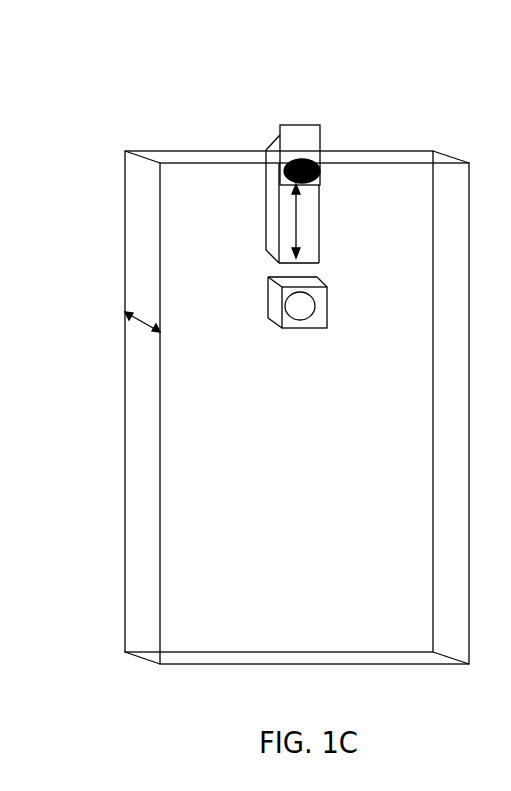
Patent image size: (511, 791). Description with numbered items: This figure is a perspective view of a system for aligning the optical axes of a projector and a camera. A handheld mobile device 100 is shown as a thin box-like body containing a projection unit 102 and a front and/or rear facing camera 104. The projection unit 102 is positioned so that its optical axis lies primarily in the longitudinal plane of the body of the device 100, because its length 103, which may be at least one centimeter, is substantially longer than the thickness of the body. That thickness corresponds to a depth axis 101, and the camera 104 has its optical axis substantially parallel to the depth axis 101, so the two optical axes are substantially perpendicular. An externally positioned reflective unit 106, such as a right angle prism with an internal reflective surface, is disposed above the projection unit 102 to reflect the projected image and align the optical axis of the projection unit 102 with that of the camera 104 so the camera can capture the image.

The handheld mobile device 100 is at (138, 520).
The depth axis 101 is at (138, 323).
The projection unit 102 is at (320, 170).
The length of projection unit 103 is at (300, 200).
The camera 104 is at (270, 281).
The reflective unit 106 is at (300, 124).